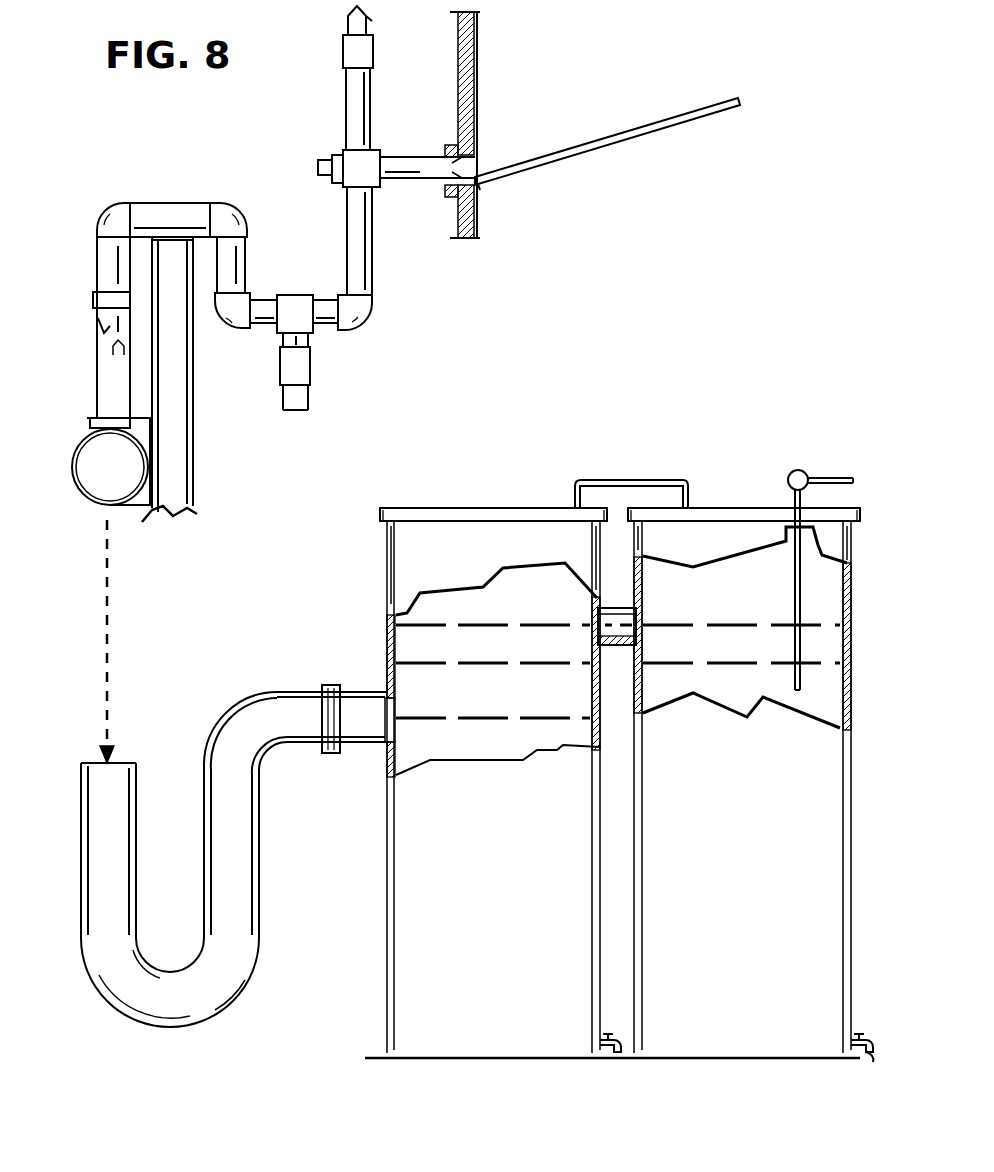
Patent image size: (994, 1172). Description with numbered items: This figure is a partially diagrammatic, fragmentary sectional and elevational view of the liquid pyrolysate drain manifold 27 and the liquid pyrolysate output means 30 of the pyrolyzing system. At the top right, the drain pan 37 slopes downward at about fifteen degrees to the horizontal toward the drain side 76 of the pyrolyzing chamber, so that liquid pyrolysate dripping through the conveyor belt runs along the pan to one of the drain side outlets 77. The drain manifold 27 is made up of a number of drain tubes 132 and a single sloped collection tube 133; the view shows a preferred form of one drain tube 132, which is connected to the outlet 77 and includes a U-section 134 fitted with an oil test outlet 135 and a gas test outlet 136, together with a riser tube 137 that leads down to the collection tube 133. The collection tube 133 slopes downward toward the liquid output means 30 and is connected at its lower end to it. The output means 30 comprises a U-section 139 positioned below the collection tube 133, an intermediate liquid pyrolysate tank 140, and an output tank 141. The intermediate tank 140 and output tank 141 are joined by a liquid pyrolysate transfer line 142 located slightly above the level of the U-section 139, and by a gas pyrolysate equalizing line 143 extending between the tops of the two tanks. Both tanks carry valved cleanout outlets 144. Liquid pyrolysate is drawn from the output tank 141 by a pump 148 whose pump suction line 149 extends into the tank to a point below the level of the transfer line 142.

The fluid pyrolysate drain manifold 27 is at (108, 165).
The liquid pyrolysate output means 30 is at (314, 628).
The drain pan 37 is at (591, 138).
The drain side 76 is at (546, 72).
The drain side outlets 77 is at (472, 168).
The drain tube 132 is at (412, 328).
The collection tube 133 is at (113, 442).
The U-section 134 is at (360, 277).
The oil test outlet 135 is at (297, 397).
The gas test outlet 136 is at (355, 52).
The riser tube 137 is at (84, 329).
The U-section 139 is at (118, 823).
The intermediate liquid pyrolysate tank 140 is at (521, 837).
The output tank 141 is at (766, 837).
The liquid pyrolysate transfer line 142 is at (642, 608).
The gas pyrolysate equalizing line 143 is at (603, 470).
The valved cleanout outlets 144 is at (612, 1050).
The pump 148 is at (800, 473).
The pump suction line 149 is at (795, 578).